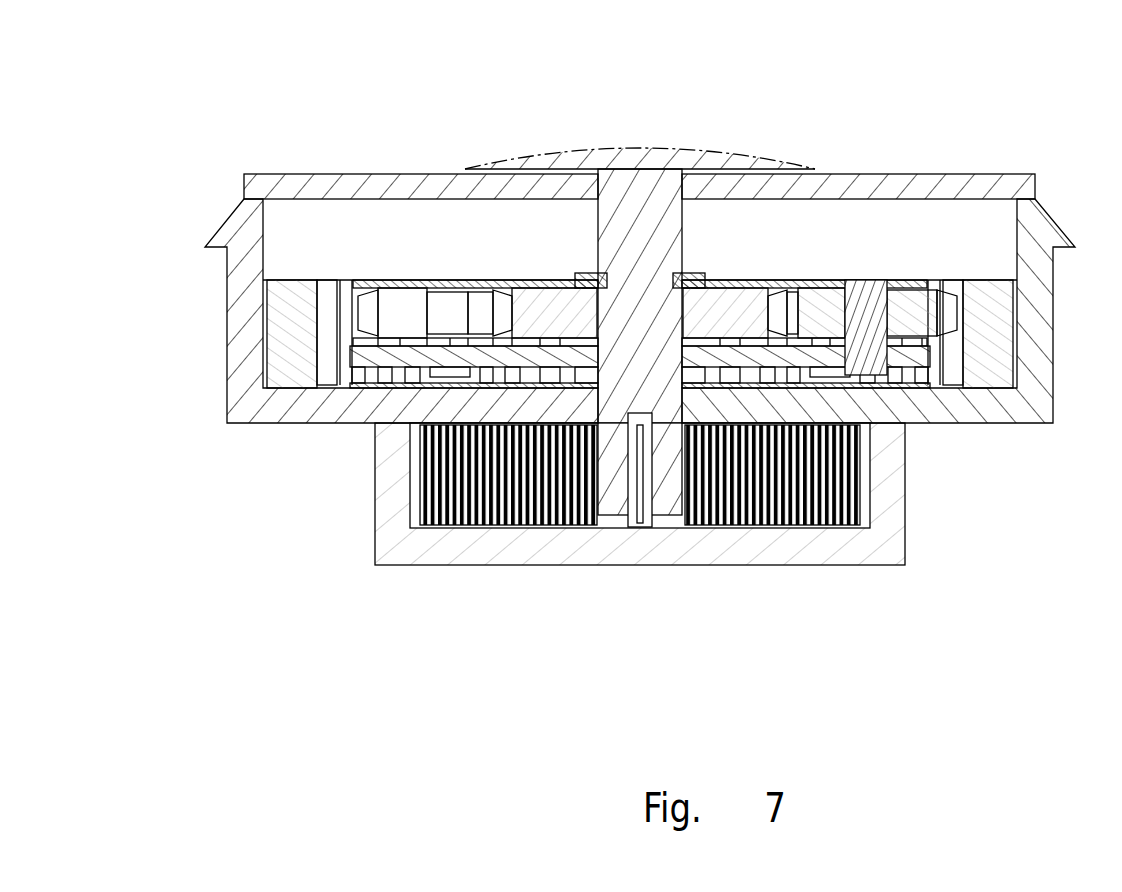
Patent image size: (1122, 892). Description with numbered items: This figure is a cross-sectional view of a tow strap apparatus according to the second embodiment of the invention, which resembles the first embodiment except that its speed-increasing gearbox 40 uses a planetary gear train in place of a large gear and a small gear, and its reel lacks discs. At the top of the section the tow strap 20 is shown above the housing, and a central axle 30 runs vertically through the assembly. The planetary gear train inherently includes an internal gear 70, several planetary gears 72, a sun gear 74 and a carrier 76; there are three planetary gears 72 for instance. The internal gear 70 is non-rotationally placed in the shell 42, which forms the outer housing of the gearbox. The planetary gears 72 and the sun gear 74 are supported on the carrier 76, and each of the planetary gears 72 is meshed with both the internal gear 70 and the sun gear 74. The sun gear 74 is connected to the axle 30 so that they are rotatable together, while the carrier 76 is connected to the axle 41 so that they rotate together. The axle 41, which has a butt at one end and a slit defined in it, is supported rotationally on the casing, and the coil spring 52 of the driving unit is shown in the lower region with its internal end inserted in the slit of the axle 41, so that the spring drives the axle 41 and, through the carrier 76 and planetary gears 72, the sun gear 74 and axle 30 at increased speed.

The tow strap 20 is at (557, 161).
The axle 30 is at (648, 177).
The speed-increasing gearbox 40 is at (499, 277).
The axle 41 is at (620, 487).
The shell 42 is at (1022, 410).
The coil spring 52 is at (815, 512).
The internal gear 70 is at (275, 322).
The planetary gears 72 is at (898, 293).
The sun gear 74 is at (725, 282).
The carrier 76 is at (403, 358).